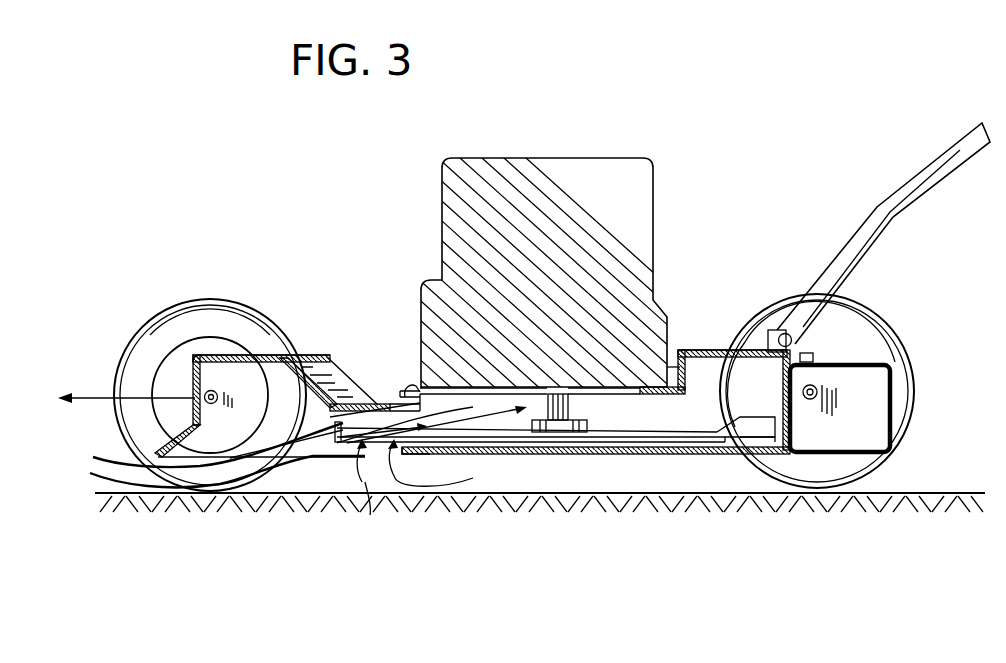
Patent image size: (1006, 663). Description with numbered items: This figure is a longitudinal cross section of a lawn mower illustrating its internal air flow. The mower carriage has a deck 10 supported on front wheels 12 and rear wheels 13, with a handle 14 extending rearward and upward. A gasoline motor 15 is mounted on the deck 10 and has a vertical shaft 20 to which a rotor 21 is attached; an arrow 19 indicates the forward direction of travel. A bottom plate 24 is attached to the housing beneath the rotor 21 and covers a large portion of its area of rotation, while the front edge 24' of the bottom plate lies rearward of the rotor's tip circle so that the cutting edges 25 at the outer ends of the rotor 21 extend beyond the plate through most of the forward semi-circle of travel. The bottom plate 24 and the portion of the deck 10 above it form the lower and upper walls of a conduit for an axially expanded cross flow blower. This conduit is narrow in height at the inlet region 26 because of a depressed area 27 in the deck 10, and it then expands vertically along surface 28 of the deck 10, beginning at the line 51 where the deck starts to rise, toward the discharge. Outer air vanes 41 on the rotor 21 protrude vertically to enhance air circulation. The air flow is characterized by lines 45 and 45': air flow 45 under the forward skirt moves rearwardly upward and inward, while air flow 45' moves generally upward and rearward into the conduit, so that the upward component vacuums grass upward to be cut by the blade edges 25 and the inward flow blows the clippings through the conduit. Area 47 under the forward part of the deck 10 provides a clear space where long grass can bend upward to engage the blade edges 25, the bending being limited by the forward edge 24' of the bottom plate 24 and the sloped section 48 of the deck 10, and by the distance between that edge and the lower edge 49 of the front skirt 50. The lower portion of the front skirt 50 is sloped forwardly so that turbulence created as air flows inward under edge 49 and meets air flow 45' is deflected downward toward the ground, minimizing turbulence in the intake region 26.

The deck 10 is at (307, 357).
The front wheels 12 is at (150, 330).
The rear wheels 13 is at (880, 343).
The handle 14 is at (897, 210).
The motor 15 is at (450, 213).
The arrow 19 is at (114, 413).
The vertical shaft 20 is at (570, 410).
The rotor 21 is at (652, 425).
The bottom plate 24 is at (596, 464).
The front edge of the bottom plate 24' is at (432, 464).
The cutting edges 25 is at (752, 437).
The inlet region 26 is at (383, 405).
The depressed area 27 is at (343, 402).
The surface 28 is at (473, 400).
The outer air vanes 41 is at (318, 423).
The air flow 45 is at (227, 458).
The air flow 45' is at (402, 495).
The area 47 is at (262, 389).
The sloped section 48 is at (307, 392).
The lower edge 49 is at (160, 452).
The front skirt 50 is at (220, 410).
The seal flap 51 is at (413, 385).